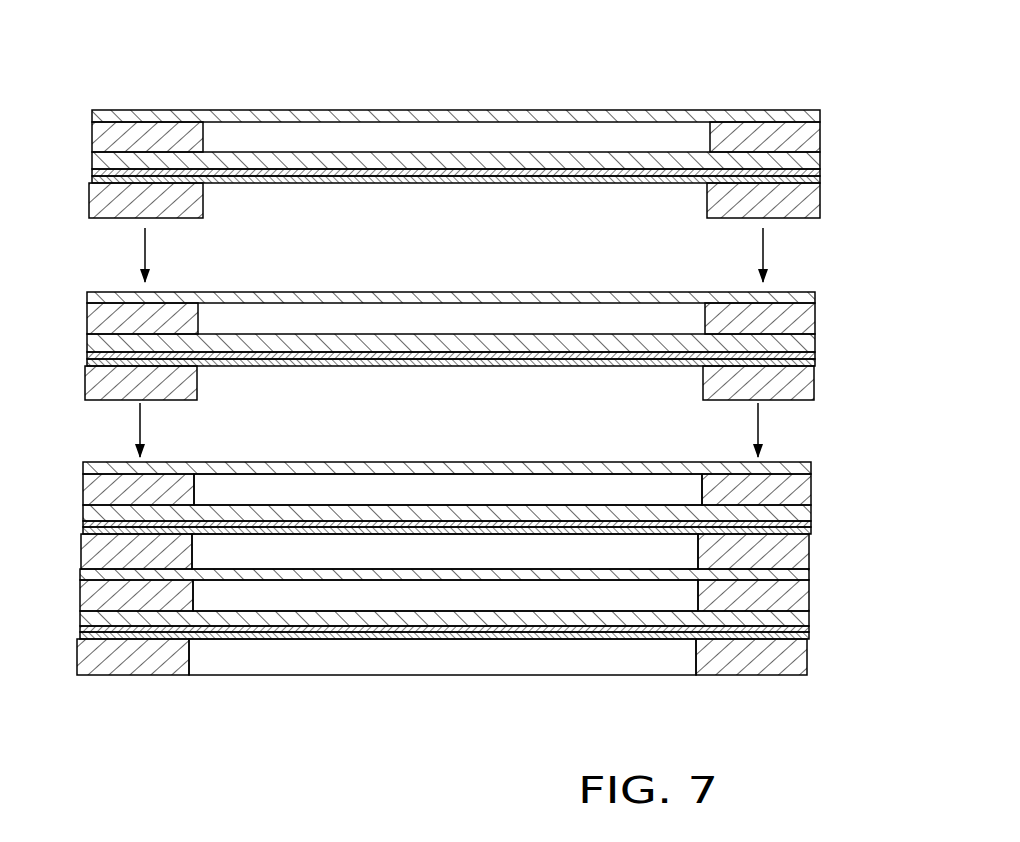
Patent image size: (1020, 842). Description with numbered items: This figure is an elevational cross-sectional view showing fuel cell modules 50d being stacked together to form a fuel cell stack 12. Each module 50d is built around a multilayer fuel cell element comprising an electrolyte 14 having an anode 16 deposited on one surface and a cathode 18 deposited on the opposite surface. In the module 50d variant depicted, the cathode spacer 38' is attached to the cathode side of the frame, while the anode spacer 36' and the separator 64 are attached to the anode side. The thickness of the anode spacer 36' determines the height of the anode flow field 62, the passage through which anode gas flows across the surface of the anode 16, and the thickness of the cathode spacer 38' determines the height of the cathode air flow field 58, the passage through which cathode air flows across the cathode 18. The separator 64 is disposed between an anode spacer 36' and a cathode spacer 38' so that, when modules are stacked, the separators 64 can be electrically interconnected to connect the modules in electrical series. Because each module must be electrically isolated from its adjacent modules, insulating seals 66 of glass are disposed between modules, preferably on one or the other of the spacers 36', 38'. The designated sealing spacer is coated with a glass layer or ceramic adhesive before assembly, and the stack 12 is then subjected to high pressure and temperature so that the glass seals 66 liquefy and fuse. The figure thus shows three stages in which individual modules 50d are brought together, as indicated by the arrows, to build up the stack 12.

The fuel cell stack 12 is at (206, 689).
The electrolyte 14 is at (370, 172).
The anode 16 is at (358, 158).
The cathode 18 is at (435, 179).
The anode spacer 36' is at (147, 93).
The cathode spacer 38' is at (170, 228).
The fuel cell module 50d is at (838, 134).
The cathode air flow field 58 is at (451, 551).
The anode flow field 62 is at (258, 480).
The separator 64 is at (262, 110).
The insulating seal 66 is at (108, 218).